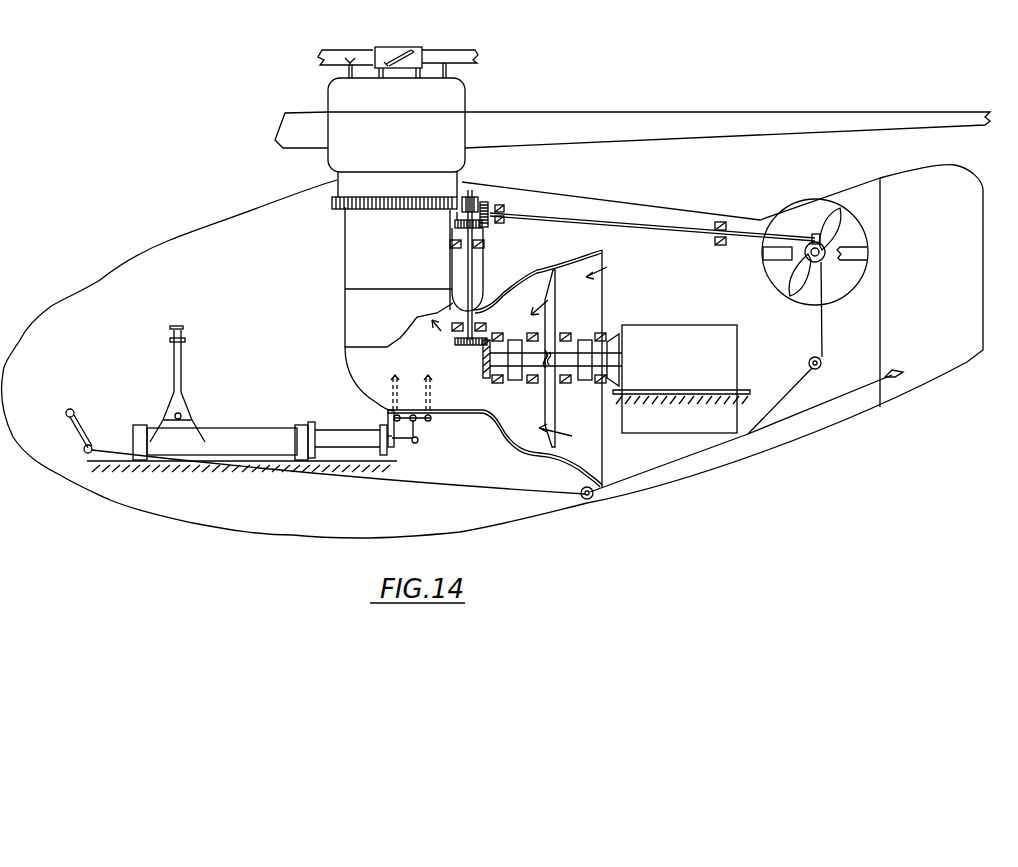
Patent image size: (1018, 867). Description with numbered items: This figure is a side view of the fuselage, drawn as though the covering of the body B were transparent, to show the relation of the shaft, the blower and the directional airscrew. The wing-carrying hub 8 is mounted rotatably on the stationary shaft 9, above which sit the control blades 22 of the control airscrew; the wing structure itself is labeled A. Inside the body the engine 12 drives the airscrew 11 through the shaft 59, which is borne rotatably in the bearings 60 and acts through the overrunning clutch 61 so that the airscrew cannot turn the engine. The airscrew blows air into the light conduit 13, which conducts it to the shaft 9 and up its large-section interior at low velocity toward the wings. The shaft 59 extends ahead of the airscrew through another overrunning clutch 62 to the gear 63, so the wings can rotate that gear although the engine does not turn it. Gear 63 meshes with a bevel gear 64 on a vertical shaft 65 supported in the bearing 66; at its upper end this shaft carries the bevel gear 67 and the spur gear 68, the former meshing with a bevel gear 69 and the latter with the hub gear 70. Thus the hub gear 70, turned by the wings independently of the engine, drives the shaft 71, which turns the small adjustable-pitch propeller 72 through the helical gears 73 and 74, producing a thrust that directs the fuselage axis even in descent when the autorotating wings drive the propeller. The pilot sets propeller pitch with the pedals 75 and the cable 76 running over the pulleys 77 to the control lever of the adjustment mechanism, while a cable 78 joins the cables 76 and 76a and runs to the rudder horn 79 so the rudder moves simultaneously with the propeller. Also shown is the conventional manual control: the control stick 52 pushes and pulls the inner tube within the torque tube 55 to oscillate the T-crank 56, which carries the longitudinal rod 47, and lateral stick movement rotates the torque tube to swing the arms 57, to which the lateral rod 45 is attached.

The pipe A is at (655, 122).
The body B is at (86, 272).
The hub 8 is at (472, 94).
The stationary shaft 9 is at (345, 257).
The airscrew 11 is at (537, 299).
The engine 12 is at (700, 374).
The light conduit 13 is at (330, 355).
The control blades 22 is at (478, 58).
The rod 45 is at (385, 412).
The rod 47 is at (400, 390).
The control stick 52 is at (183, 366).
The torque tube 55 is at (243, 430).
The T-crank 56 is at (425, 431).
The arms 57 is at (400, 454).
The shaft 59 is at (617, 335).
The bearings 60 is at (556, 346).
The overrunning clutch 61 is at (585, 381).
The overrunning clutch 62 is at (520, 381).
The gear 63 is at (535, 366).
The bevel gear 64 is at (460, 346).
The vertical shaft 65 is at (479, 267).
The bearing 66 is at (488, 244).
The bevel gear 67 is at (455, 221).
The spur gear 68 is at (470, 197).
The bevel gear 69 is at (488, 205).
The hub gear 70 is at (390, 206).
The shaft 71 is at (617, 216).
The propeller 72 is at (833, 222).
The helical gear 73 is at (818, 234).
The helical gear 74 is at (826, 262).
The pedals 75 is at (83, 438).
The cable 76 is at (430, 483).
The cable 76a is at (748, 436).
The pulleys 77 is at (593, 499).
The cable 78 is at (843, 402).
The rudder horn 79 is at (897, 378).